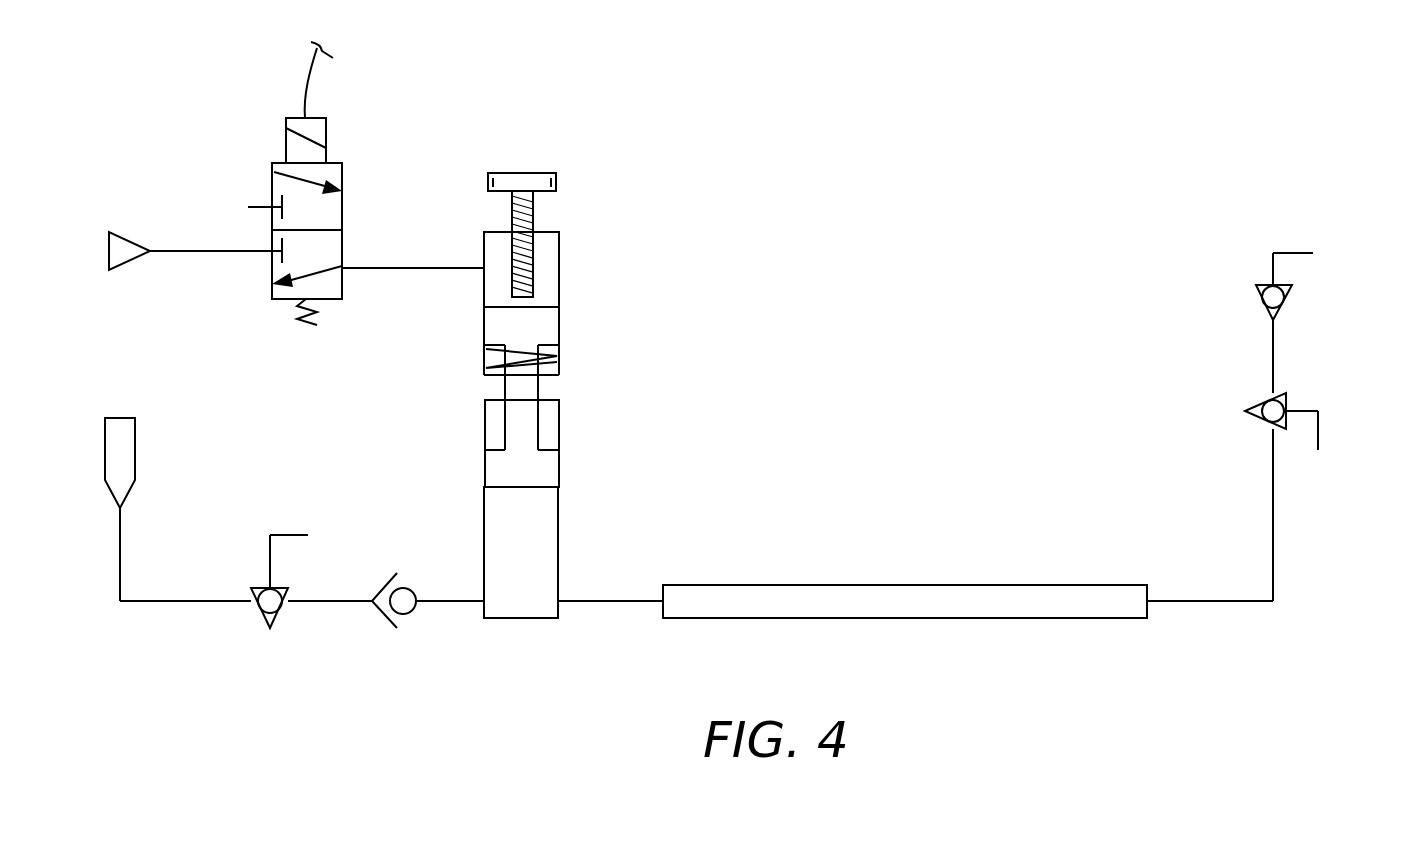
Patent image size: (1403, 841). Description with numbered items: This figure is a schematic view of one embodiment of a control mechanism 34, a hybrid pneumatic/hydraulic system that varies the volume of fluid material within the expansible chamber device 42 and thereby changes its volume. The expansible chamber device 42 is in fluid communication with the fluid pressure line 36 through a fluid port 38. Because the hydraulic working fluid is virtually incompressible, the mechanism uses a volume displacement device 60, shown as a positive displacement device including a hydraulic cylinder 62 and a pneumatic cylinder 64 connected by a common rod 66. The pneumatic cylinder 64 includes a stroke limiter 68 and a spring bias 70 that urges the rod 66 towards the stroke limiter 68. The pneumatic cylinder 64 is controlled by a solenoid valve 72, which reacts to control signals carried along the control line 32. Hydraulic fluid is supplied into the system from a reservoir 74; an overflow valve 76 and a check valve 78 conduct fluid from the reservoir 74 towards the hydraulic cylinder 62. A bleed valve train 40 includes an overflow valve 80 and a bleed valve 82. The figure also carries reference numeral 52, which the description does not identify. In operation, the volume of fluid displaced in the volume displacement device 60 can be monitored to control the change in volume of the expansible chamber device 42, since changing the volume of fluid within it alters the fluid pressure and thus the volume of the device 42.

The control line 32 is at (305, 83).
The solenoid valve 72 is at (343, 172).
The fluid pressure line 36 is at (187, 251).
The control mechanism 34 is at (526, 395).
The stroke limiter 68 is at (533, 210).
The pneumatic cylinder 64 is at (559, 275).
The spring bias 70 is at (490, 353).
The common rod 66 is at (542, 388).
The volume displacement device 60 is at (470, 442).
The hydraulic cylinder 62 is at (558, 503).
The fluid port 38 is at (607, 598).
The expansible chamber device 42 is at (932, 618).
The return line 52 is at (1217, 601).
The bleed valve train 40 is at (1296, 427).
The bleed valve 82 is at (1292, 299).
The overflow valve 80 is at (1258, 408).
The reservoir 74 is at (105, 450).
The overflow valve 76 is at (277, 615).
The check valve 78 is at (390, 628).